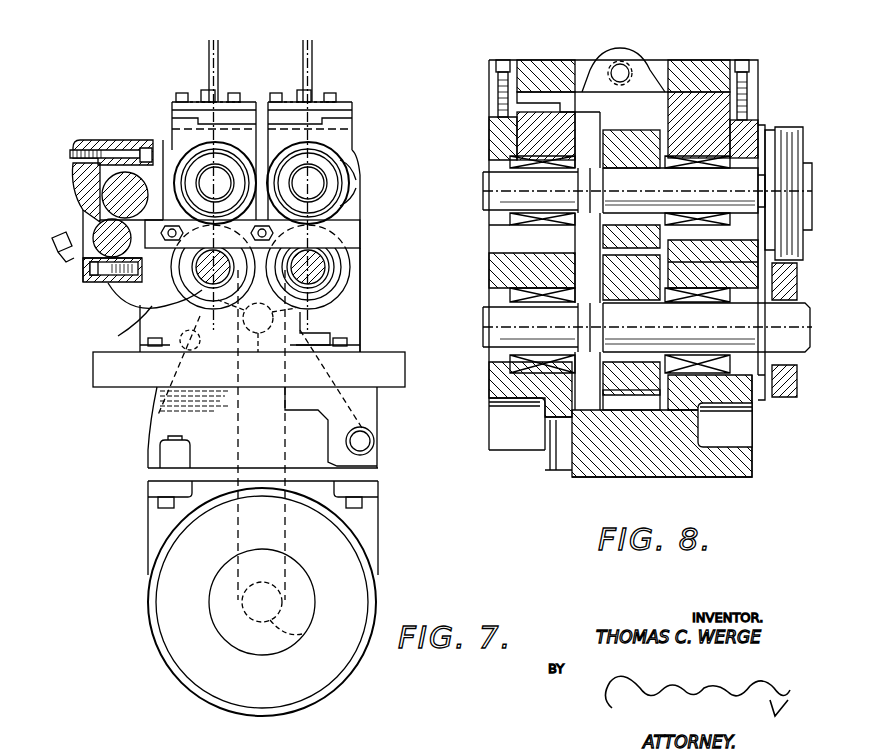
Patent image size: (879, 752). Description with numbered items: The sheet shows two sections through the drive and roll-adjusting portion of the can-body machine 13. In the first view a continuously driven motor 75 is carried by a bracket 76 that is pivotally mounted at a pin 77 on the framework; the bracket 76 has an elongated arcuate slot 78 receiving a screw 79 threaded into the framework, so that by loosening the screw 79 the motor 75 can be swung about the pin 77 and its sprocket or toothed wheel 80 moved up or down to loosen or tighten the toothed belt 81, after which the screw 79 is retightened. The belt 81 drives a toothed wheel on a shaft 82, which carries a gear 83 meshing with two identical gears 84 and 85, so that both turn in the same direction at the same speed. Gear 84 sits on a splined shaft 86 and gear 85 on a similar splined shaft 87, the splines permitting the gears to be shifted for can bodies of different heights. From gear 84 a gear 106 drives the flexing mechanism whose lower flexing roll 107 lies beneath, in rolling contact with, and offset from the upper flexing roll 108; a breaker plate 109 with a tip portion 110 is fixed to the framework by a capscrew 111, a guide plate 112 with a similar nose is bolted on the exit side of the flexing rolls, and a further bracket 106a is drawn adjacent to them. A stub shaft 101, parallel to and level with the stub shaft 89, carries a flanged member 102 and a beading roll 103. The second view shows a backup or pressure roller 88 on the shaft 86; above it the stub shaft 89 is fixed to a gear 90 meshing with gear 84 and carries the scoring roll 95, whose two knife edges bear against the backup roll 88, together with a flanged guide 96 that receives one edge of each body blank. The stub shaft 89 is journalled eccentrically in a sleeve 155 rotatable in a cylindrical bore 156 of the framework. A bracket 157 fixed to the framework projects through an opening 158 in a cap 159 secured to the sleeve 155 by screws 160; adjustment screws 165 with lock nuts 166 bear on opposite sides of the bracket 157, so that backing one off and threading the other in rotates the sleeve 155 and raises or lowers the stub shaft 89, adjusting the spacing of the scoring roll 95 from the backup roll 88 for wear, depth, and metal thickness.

In FIG. 7, the drive assembly 13 is at (120, 78).
In FIG. 8, the drive assembly 13 is at (775, 70).
In FIG. 7, the motor 75 is at (345, 561).
In FIG. 7, the bracket 76 is at (372, 511).
In FIG. 7, the pivot pin 77 is at (372, 438).
In FIG. 7, the elongated arcuate slot 78 is at (185, 366).
In FIG. 7, the screw 79 is at (188, 326).
In FIG. 7, the sprocket or toothed wheel 80 is at (302, 634).
In FIG. 7, the toothed belt 81 is at (238, 535).
In FIG. 7, the shaft 82 is at (302, 322).
In FIG. 7, the gear 83 is at (258, 352).
In FIG. 7, the gear 84 is at (120, 300).
In FIG. 8, the gear 84 is at (610, 385).
In FIG. 7, the gear 85 is at (336, 282).
In FIG. 7, the splined shaft 86 is at (210, 283).
In FIG. 8, the splined shaft 86 is at (803, 384).
In FIG. 7, the splined shaft 87 is at (330, 262).
In FIG. 7, the backup roller 88 is at (132, 322).
In FIG. 8, the backup roller 88 is at (783, 398).
In FIG. 7, the stub shaft 89 is at (197, 197).
In FIG. 8, the stub shaft 89 is at (800, 246).
In FIG. 8, the gear 90 is at (614, 130).
In FIG. 7, the scoring roll 95 is at (190, 156).
In FIG. 8, the scoring roll 95 is at (790, 136).
In FIG. 7, the flanged guide 96 is at (193, 148).
In FIG. 8, the flanged guide 96 is at (766, 126).
In FIG. 7, the stub shaft 101 is at (316, 175).
In FIG. 7, the flanged member 102 is at (332, 152).
In FIG. 7, the beading roll 103 is at (349, 180).
In FIG. 7, the gear 106 is at (335, 198).
In FIG. 7, the bracket 106a is at (112, 288).
In FIG. 7, the flexing roll 107 is at (93, 232).
In FIG. 7, the upper flexing roll 108 is at (112, 191).
In FIG. 7, the breaker plate 109 is at (80, 165).
In FIG. 7, the tip portion 110 is at (105, 217).
In FIG. 7, the capscrew 111 is at (125, 140).
In FIG. 7, the guide plate 112 is at (52, 238).
In FIG. 8, the sleeve 155 is at (510, 232).
In FIG. 8, the cylindrical bore 156 is at (520, 152).
In FIG. 7, the bracket 157 is at (207, 90).
In FIG. 8, the bracket 157 is at (628, 58).
In FIG. 7, the opening 158 is at (182, 93).
In FIG. 8, the opening 158 is at (583, 60).
In FIG. 7, the cap 159 is at (195, 117).
In FIG. 8, the cap 159 is at (705, 62).
In FIG. 8, the screws 160 is at (503, 58).
In FIG. 7, the adjustment screws 165 is at (222, 92).
In FIG. 8, the adjustment screws 165 is at (636, 58).
In FIG. 7, the lock nuts 166 is at (236, 93).